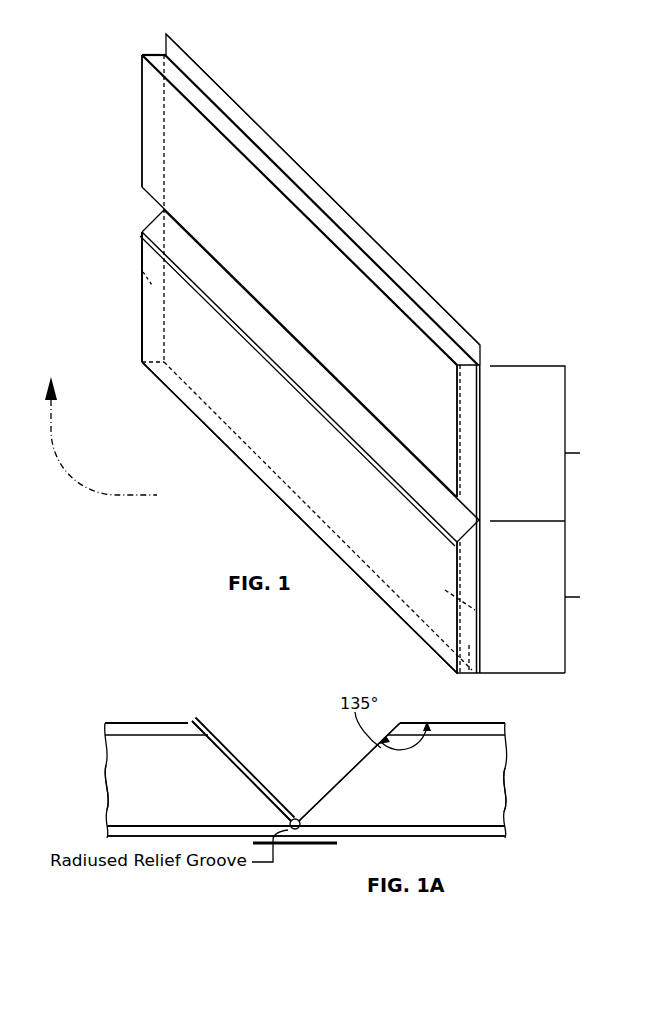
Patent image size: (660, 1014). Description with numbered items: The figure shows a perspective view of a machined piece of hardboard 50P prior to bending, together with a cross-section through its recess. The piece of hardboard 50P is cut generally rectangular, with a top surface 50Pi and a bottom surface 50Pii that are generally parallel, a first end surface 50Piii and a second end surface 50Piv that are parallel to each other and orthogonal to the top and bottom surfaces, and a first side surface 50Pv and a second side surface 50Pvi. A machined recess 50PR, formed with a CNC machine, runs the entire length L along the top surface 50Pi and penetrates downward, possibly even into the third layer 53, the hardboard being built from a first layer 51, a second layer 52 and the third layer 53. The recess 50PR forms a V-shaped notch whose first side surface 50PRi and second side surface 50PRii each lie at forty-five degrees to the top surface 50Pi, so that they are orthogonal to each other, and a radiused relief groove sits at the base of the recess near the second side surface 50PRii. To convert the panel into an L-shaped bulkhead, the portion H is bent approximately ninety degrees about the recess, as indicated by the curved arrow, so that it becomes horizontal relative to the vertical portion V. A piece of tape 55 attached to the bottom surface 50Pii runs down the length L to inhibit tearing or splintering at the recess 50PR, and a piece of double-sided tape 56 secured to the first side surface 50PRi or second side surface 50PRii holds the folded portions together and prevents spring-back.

In FIG. 1, the piece of hardboard 50P is at (248, 471).
In FIG. 1, the top surface 50Pi is at (450, 624).
In FIG. 1A, the top surface 50Pi is at (160, 722).
In FIG. 1, the bottom surface 50Pii is at (480, 608).
In FIG. 1A, the bottom surface 50Pii is at (472, 843).
In FIG. 1, the first end surface 50Piii is at (468, 676).
In FIG. 1, the second end surface 50Piv is at (142, 265).
In FIG. 1, the first side surface 50Pv is at (181, 82).
In FIG. 1, the second side surface 50Pvi is at (207, 430).
In FIG. 1, the machined recess 50PR is at (453, 514).
In FIG. 1A, the machined recess 50PR is at (297, 721).
In FIG. 1A, the first side surface of recess 50PRi is at (217, 768).
In FIG. 1A, the second side surface of recess 50PRii is at (353, 766).
In FIG. 1A, the first layer 51 is at (354, 733).
In FIG. 1A, the second layer 52 is at (352, 780).
In FIG. 1A, the third layer 53 is at (355, 834).
In FIG. 1A, the piece of tape 55 is at (317, 848).
In FIG. 1A, the double-sided tape 56 is at (207, 732).
In FIG. 1, the length L is at (338, 204).
In FIG. 1, the vertical portion V is at (547, 519).
In FIG. 1, the horizontal portion H is at (543, 632).